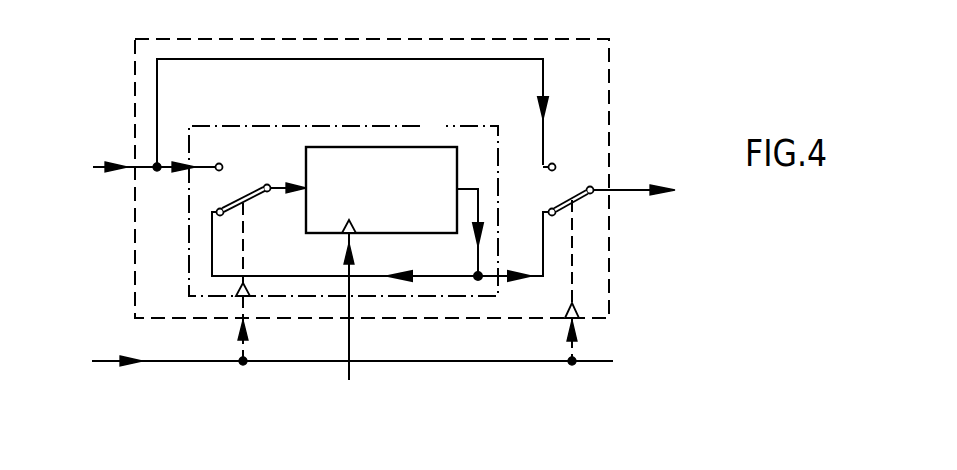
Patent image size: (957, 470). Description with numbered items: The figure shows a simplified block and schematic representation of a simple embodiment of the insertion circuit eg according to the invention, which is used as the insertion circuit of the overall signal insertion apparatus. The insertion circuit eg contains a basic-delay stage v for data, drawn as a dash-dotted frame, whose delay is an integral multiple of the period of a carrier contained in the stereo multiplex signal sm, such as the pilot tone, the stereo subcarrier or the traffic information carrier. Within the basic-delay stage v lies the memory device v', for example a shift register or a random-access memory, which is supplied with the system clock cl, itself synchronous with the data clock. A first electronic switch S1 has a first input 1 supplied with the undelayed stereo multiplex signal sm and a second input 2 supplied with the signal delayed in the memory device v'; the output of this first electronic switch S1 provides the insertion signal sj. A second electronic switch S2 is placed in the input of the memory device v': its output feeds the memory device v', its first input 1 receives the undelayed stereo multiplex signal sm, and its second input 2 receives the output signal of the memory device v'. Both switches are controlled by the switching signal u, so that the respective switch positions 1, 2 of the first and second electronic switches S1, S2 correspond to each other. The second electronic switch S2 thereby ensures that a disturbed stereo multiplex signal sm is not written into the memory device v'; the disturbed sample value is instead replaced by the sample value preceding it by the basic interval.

The insertion circuit eg is at (611, 72).
The basic-delay stage v is at (343, 190).
The memory device v' is at (381, 154).
The first electronic switch S1 is at (576, 187).
The second electronic switch S2 is at (258, 185).
The stereo multiplex signal sm is at (136, 167).
The insertion signal sj is at (648, 192).
The switching signal u is at (343, 361).
The system clock cl is at (346, 316).
The first input 1 is at (376, 161).
The second input 2 is at (372, 205).